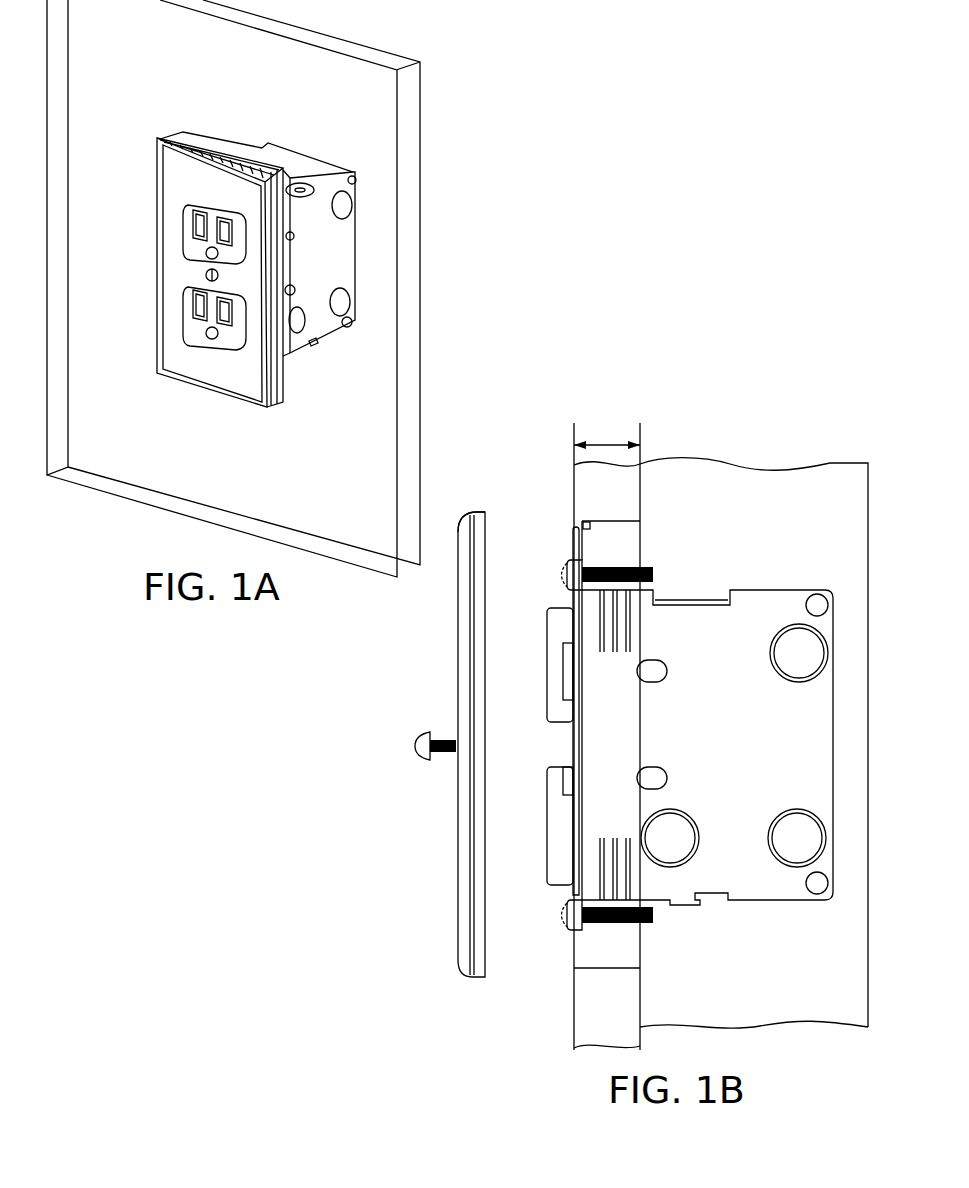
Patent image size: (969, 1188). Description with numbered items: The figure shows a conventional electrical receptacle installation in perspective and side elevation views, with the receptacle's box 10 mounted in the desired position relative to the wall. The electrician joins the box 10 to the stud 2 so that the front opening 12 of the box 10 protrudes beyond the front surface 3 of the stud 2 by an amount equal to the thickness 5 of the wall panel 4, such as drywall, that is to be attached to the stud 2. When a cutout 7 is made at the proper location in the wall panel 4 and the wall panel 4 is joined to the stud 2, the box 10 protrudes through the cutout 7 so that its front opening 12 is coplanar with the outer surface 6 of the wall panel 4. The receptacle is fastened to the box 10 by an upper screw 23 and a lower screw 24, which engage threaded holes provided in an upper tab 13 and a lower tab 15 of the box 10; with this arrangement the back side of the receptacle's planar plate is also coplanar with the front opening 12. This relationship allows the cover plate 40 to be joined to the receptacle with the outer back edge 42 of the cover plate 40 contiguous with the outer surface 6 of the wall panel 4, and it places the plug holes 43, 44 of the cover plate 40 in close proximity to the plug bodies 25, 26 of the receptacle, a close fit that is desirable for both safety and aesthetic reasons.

In FIG. 1B, the stud 2 is at (748, 487).
In FIG. 1B, the front surface of the stud 3 is at (641, 552).
In FIG. 1A, the wall panel 4 is at (426, 129).
In FIG. 1B, the wall panel 4 is at (562, 484).
In FIG. 1B, the thickness of the wall panel 5 is at (607, 452).
In FIG. 1B, the outer surface of the wall panel 6 is at (574, 985).
In FIG. 1A, the cutout 7 is at (228, 148).
In FIG. 1B, the cutout 7 is at (588, 521).
In FIG. 1A, the box 10 is at (327, 166).
In FIG. 1B, the box 10 is at (767, 584).
In FIG. 1B, the front opening of the box 12 is at (579, 835).
In FIG. 1B, the upper tab 13 is at (570, 572).
In FIG. 1B, the lower tab 15 is at (576, 924).
In FIG. 1B, the upper screw 23 is at (608, 568).
In FIG. 1B, the lower screw 24 is at (608, 924).
In FIG. 1A, the plug body 25 is at (212, 215).
In FIG. 1B, the plug body 25 is at (547, 664).
In FIG. 1A, the plug body 26 is at (222, 340).
In FIG. 1B, the plug body 26 is at (547, 820).
In FIG. 1A, the cover plate 40 is at (153, 345).
In FIG. 1B, the cover plate 40 is at (443, 634).
In FIG. 1A, the outer back edge of the cover plate 42 is at (172, 138).
In FIG. 1B, the outer back edge of the cover plate 42 is at (485, 538).
In FIG. 1A, the plug hole 43 is at (183, 226).
In FIG. 1A, the plug hole 44 is at (183, 308).